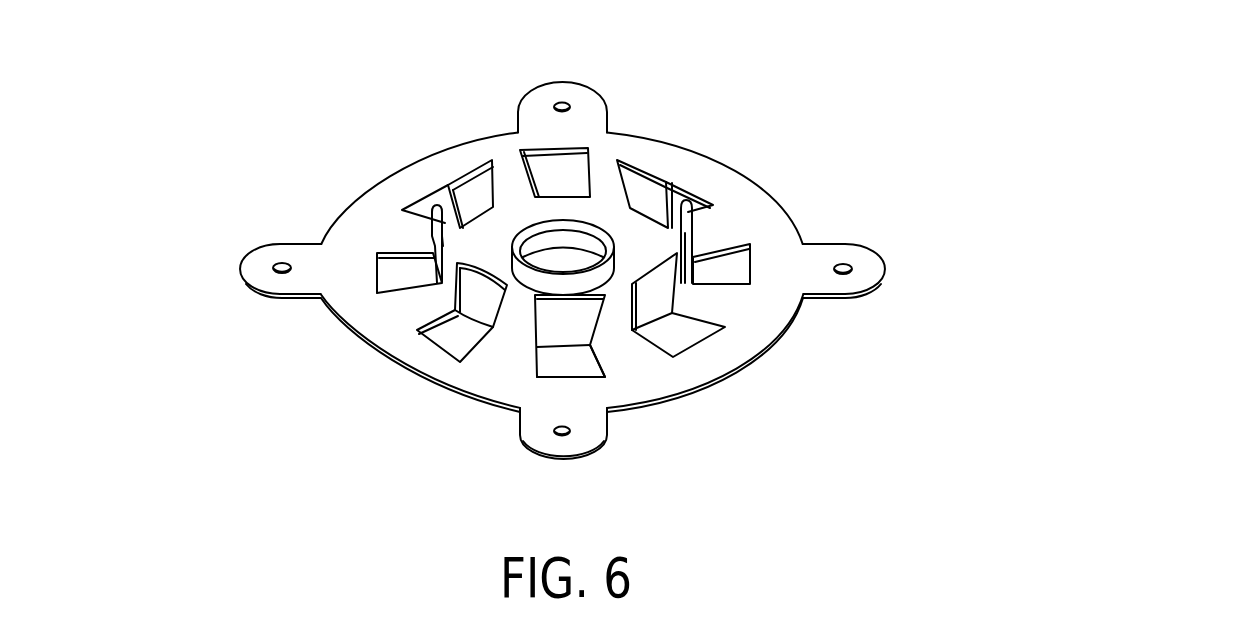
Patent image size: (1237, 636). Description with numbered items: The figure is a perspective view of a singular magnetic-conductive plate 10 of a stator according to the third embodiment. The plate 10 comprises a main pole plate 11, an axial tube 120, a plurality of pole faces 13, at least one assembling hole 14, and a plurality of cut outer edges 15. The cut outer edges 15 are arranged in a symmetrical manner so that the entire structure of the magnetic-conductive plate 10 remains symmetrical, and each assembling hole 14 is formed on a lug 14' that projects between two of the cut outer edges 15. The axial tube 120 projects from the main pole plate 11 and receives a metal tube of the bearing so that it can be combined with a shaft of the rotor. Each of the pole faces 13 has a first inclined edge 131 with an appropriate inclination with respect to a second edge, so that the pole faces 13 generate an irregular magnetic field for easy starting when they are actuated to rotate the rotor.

The singular magnetic-conductive plate 10 is at (786, 145).
The main pole plate 11 is at (523, 213).
The axial tube 120 is at (590, 222).
The pole face 13 is at (557, 313).
The first inclined edge 131 is at (600, 323).
The assembling hole 14 is at (892, 241).
The lug 14' is at (885, 297).
The cut outer edge 15 is at (757, 358).